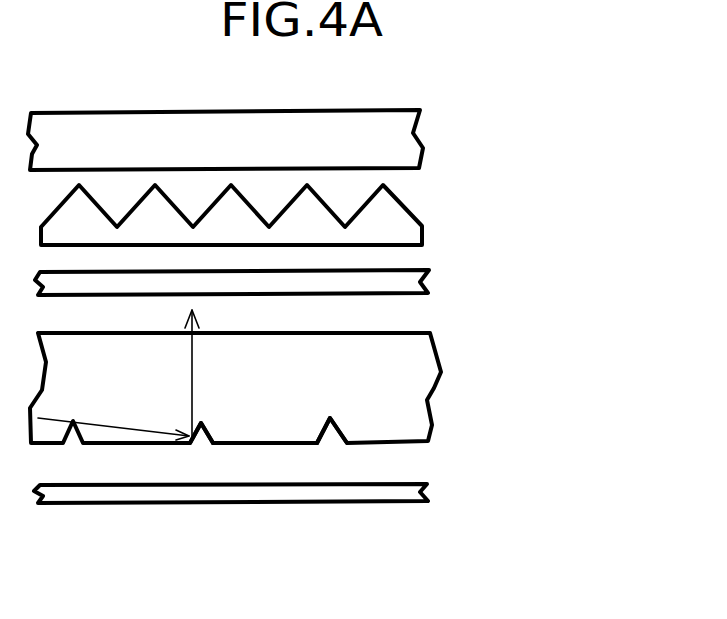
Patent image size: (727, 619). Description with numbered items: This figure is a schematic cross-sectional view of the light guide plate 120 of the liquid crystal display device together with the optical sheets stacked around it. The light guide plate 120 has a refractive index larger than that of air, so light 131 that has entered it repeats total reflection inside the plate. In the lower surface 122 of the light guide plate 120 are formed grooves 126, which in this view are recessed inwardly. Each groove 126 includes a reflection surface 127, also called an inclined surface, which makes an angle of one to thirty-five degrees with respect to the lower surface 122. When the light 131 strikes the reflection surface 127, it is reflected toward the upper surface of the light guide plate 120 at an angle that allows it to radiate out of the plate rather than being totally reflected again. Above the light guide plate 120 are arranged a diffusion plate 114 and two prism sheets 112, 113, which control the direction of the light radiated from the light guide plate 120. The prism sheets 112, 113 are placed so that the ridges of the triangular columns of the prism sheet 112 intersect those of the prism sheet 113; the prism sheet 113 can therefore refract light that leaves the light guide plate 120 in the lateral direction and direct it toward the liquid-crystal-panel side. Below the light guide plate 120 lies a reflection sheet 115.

The prism sheet 113 is at (425, 150).
The prism sheet 112 is at (425, 227).
The diffusion plate 114 is at (430, 282).
The light guide plate 120 is at (420, 383).
The reflection sheet 115 is at (428, 493).
The reflection surface 127 is at (190, 443).
The groove 126 is at (332, 441).
The lower surface 122 is at (270, 443).
The light 131 is at (133, 443).